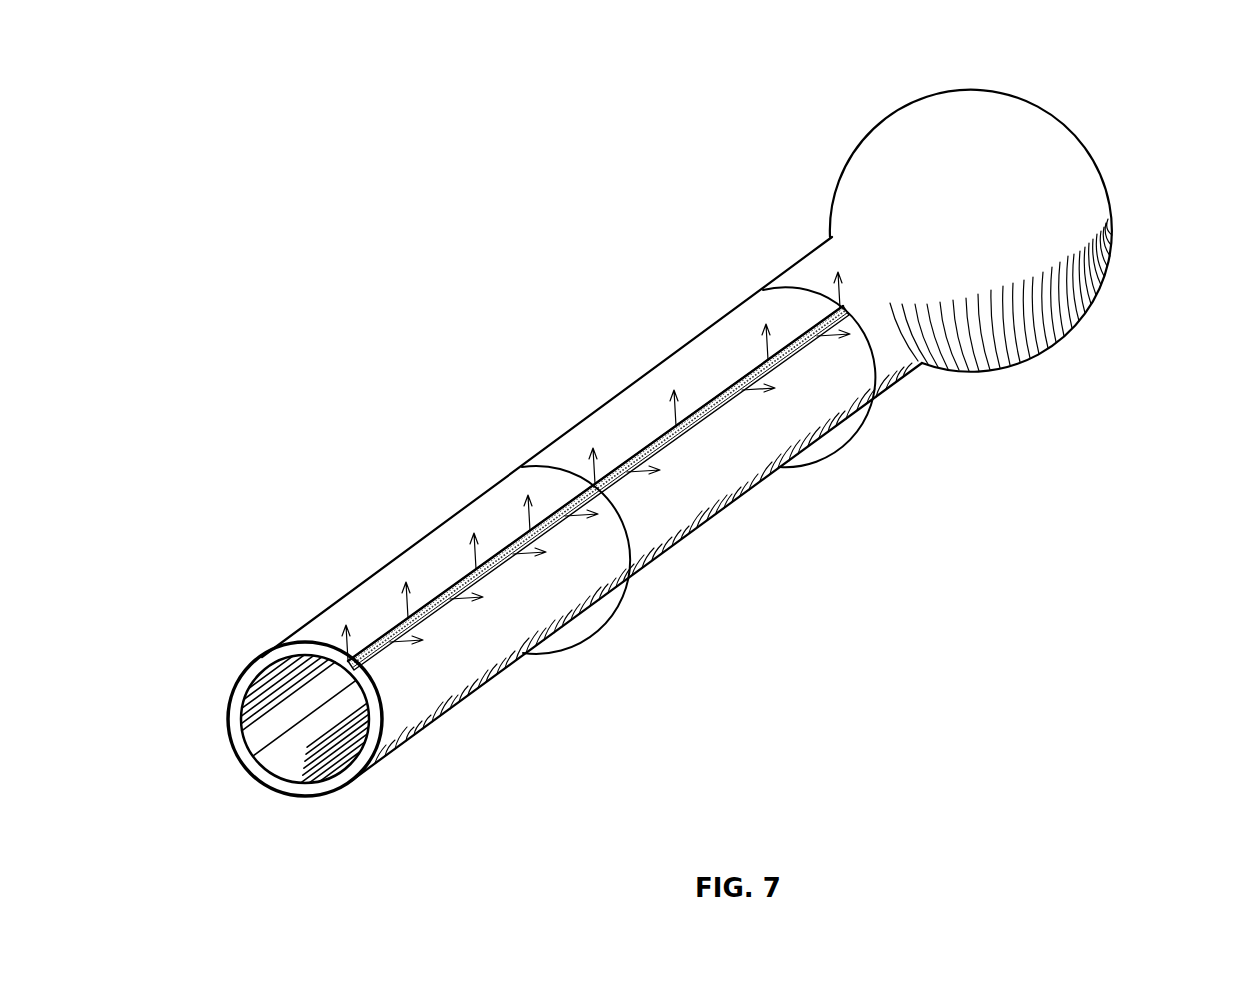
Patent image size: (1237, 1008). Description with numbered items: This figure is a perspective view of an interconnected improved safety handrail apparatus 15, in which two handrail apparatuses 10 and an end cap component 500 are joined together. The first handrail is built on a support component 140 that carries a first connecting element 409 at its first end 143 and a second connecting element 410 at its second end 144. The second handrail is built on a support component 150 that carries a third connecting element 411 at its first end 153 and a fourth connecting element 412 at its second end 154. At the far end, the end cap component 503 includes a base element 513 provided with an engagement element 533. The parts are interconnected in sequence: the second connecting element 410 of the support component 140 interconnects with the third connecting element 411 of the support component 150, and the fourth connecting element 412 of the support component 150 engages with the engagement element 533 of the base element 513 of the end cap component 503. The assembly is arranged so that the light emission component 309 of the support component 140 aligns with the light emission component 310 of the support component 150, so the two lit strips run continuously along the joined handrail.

The handrail apparatus 10 is at (645, 322).
The interconnected improved safety handrail apparatus 15 is at (233, 393).
The support component 140 is at (430, 707).
The first end 143 is at (228, 720).
The second end 144 is at (527, 468).
The support component 150 is at (718, 513).
The first end 153 is at (545, 463).
The second end 154 is at (763, 290).
The light emission component 309 is at (523, 653).
The light emission component 310 is at (735, 393).
The first connecting element 409 is at (281, 797).
The second connecting element 410 is at (620, 580).
The third connecting element 411 is at (632, 577).
The fourth connecting element 412 is at (870, 397).
The end cap component 500 is at (830, 83).
The end cap component 503 is at (1087, 205).
The base element 513 is at (910, 365).
The engagement element 533 is at (897, 362).